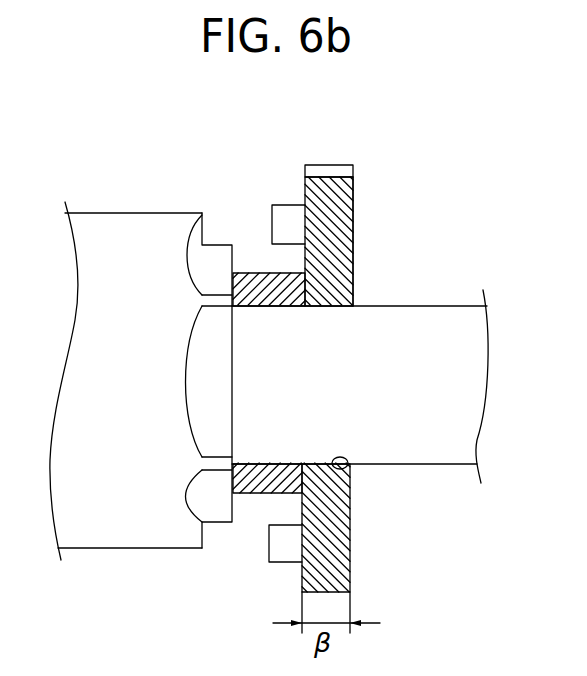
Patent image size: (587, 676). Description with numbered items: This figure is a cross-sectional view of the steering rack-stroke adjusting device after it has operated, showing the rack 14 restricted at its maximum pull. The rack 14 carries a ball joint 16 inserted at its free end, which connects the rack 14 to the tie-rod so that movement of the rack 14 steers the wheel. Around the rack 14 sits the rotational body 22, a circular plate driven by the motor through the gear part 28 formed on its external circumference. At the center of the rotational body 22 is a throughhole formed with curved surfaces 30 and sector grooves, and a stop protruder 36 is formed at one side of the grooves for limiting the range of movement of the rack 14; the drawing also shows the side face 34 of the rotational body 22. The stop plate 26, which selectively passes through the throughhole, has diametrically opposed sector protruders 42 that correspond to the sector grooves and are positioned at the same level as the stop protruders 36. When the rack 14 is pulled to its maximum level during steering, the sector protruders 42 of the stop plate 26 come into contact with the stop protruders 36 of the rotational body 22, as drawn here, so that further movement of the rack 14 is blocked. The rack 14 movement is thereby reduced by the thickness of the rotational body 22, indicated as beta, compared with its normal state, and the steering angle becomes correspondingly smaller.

The rack 14 is at (458, 457).
The ball joint 16 is at (115, 540).
The rotational body 22 is at (372, 222).
The stop plate 26 is at (252, 505).
The gear part 28 is at (353, 165).
The curved surface 30 is at (352, 467).
The gear side face 34 is at (354, 256).
The stop protruder 36 is at (286, 213).
The sector protruder 42 is at (264, 275).